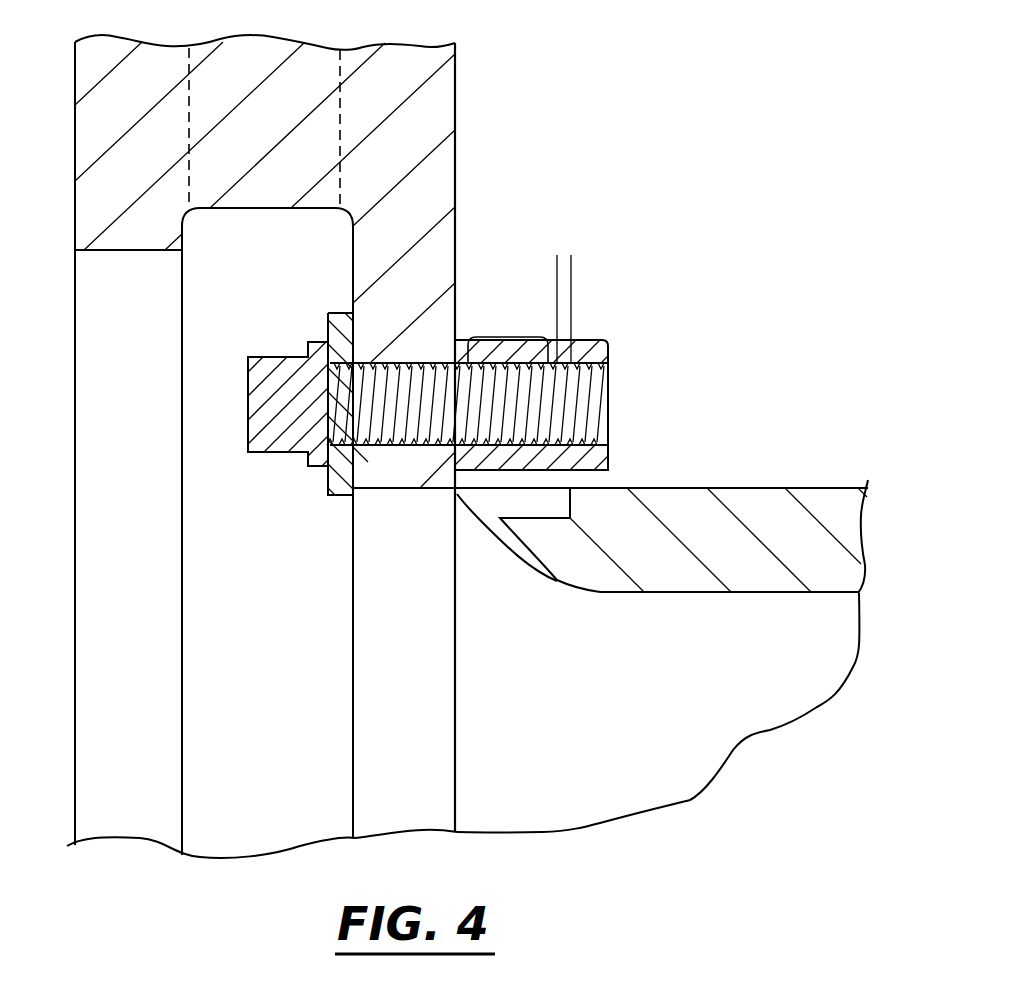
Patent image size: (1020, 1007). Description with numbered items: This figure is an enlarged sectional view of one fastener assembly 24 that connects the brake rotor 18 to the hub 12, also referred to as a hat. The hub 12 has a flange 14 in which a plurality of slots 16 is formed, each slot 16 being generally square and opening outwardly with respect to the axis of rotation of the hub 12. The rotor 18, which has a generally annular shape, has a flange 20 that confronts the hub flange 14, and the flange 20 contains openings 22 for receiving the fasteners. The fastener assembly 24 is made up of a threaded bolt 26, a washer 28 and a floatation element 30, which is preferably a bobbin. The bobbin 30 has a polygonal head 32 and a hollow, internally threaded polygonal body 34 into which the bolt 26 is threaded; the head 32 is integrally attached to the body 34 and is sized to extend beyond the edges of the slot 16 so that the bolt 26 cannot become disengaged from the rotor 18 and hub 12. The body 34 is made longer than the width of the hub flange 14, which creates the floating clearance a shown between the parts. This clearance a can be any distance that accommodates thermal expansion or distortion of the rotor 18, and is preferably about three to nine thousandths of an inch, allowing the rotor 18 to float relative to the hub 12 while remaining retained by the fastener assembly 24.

The hub 12 is at (698, 487).
The flange 14 is at (556, 478).
The slot 16 is at (512, 517).
The rotor 18 is at (458, 165).
The flange 20 is at (353, 268).
The opening 22 is at (388, 447).
The fastener assembly 24 is at (468, 332).
The threaded bolt 26 is at (248, 402).
The washer 28 is at (330, 492).
The floatation element 30 is at (612, 352).
The polygonal head 32 is at (592, 340).
The polygonal body 34 is at (505, 478).
The floating clearance a is at (518, 268).